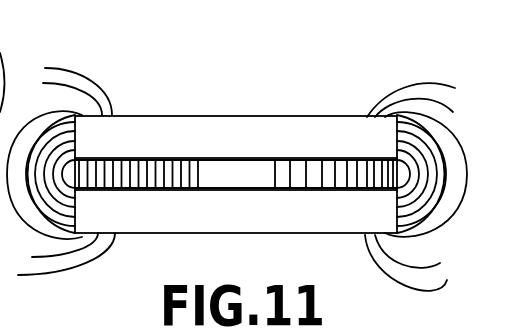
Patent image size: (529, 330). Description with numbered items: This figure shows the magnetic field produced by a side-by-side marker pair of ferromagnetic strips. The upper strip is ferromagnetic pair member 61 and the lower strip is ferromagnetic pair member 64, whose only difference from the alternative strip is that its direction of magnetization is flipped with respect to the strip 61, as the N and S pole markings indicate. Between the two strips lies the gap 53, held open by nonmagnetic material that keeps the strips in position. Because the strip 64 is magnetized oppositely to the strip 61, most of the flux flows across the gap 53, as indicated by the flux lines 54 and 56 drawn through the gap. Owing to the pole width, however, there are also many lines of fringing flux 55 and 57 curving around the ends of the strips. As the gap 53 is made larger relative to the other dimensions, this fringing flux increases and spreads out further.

The gap 53 is at (245, 172).
The flux lines 54 is at (337, 180).
The fringing flux 55 is at (405, 90).
The flux lines 56 is at (160, 178).
The fringing flux 57 is at (72, 80).
The ferromagnetic pair member 61 is at (187, 128).
The ferromagnetic pair member 64 is at (202, 215).